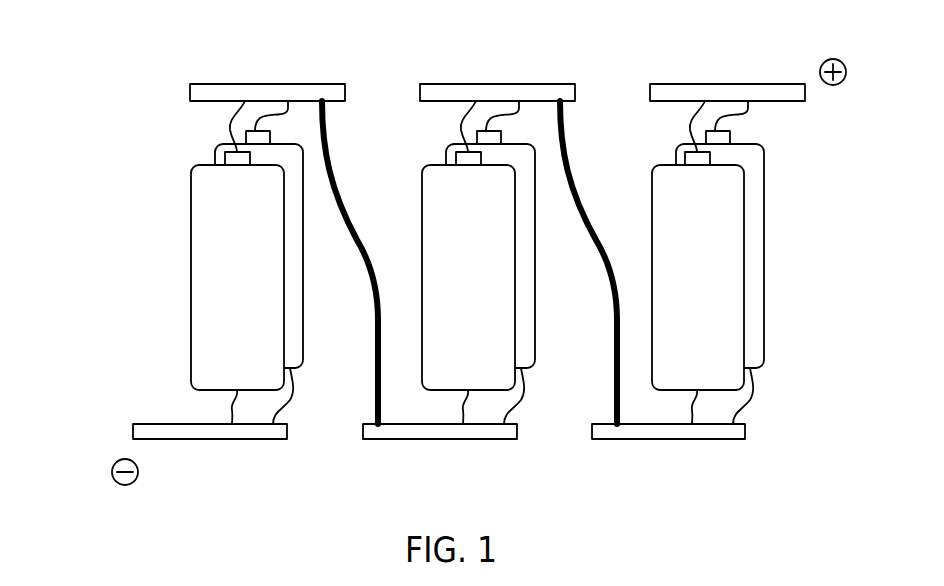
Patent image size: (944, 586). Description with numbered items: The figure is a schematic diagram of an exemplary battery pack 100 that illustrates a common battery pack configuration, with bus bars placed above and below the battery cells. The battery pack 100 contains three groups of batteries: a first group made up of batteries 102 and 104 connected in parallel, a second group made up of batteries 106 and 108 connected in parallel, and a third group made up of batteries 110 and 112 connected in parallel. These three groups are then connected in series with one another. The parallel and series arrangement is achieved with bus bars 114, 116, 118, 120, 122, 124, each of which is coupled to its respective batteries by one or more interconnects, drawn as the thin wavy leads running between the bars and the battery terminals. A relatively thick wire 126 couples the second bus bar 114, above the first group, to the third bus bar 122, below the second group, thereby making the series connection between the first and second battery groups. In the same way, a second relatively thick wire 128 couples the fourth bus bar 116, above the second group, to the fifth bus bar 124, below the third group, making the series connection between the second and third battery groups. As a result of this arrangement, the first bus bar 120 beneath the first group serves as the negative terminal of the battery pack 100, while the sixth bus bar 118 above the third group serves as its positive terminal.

The battery pack 100 is at (85, 44).
The battery 102 is at (191, 237).
The battery 104 is at (213, 157).
The battery 106 is at (421, 256).
The battery 108 is at (443, 152).
The battery 110 is at (650, 230).
The battery 112 is at (672, 157).
The second bus bar 114 is at (209, 84).
The fourth bus bar 116 is at (448, 84).
The sixth bus bar 118 is at (677, 84).
The first bus bar 120 is at (258, 440).
The third bus bar 122 is at (462, 440).
The fifth bus bar 124 is at (707, 440).
The relatively thick wire 126 is at (375, 310).
The second relatively thick wire 128 is at (608, 327).